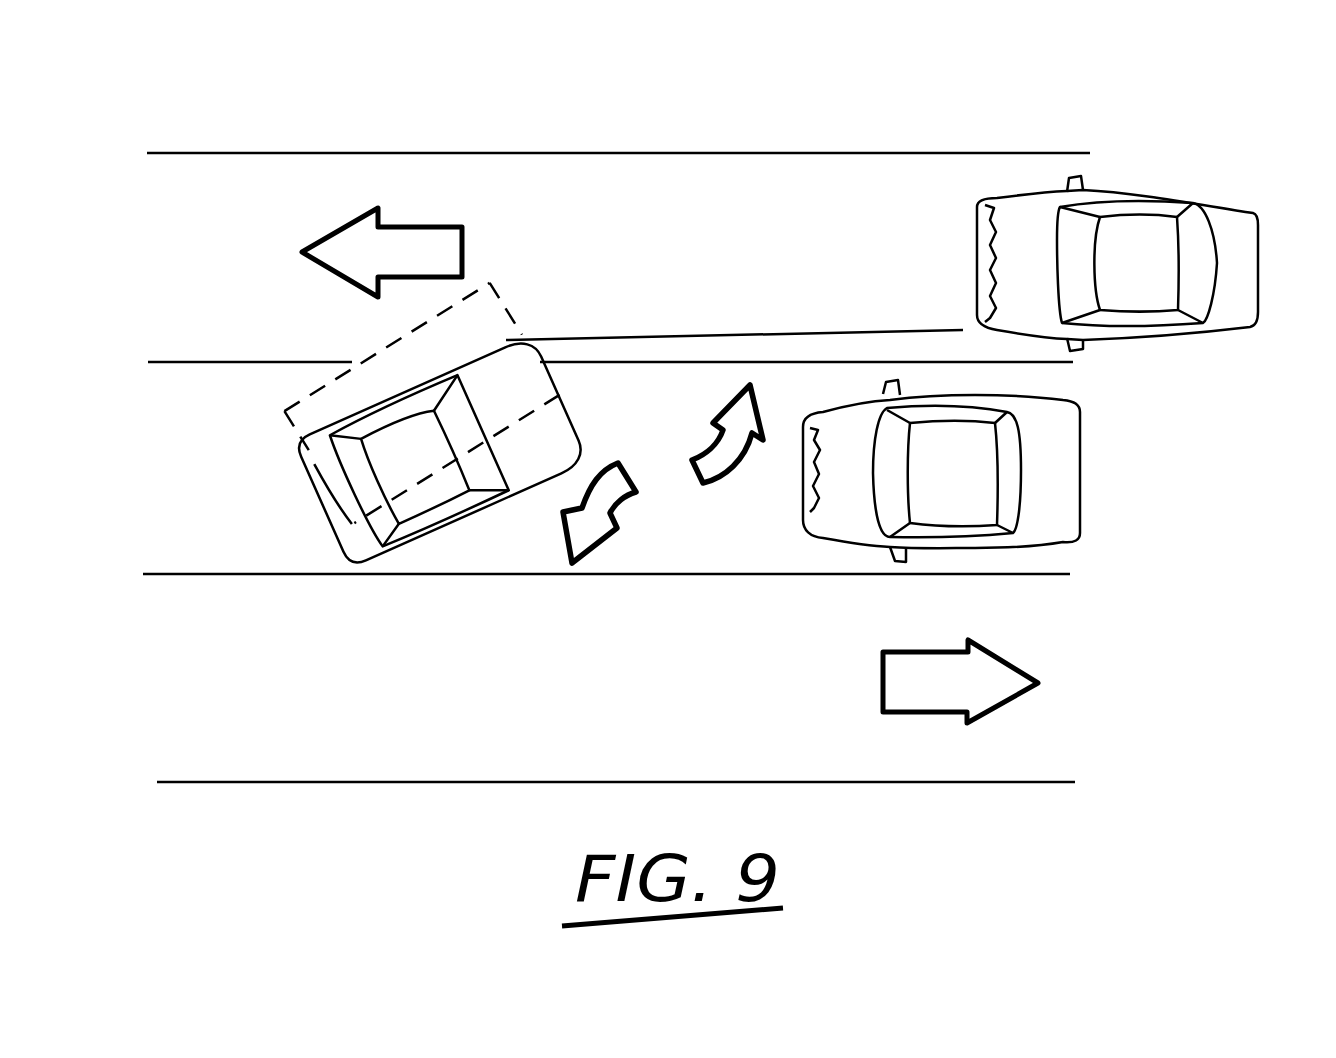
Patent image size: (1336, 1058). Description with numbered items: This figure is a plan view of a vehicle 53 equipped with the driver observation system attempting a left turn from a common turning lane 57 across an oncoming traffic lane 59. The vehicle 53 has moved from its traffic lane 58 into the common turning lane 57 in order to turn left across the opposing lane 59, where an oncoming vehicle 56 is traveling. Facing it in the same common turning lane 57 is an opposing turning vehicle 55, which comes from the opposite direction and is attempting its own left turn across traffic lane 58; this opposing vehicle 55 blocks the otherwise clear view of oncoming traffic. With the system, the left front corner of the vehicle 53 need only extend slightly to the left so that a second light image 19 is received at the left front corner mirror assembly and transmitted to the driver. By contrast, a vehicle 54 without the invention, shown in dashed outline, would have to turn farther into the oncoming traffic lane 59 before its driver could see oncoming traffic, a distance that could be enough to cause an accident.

The second light image 19 is at (735, 339).
The vehicle 53 is at (485, 516).
The vehicle without the invention 54 is at (506, 292).
The opposing turning vehicle 55 is at (1082, 440).
The oncoming vehicle 56 is at (1143, 190).
The common turning lane 57 is at (243, 518).
The traffic lane 58 is at (377, 693).
The oncoming traffic lane 59 is at (838, 203).